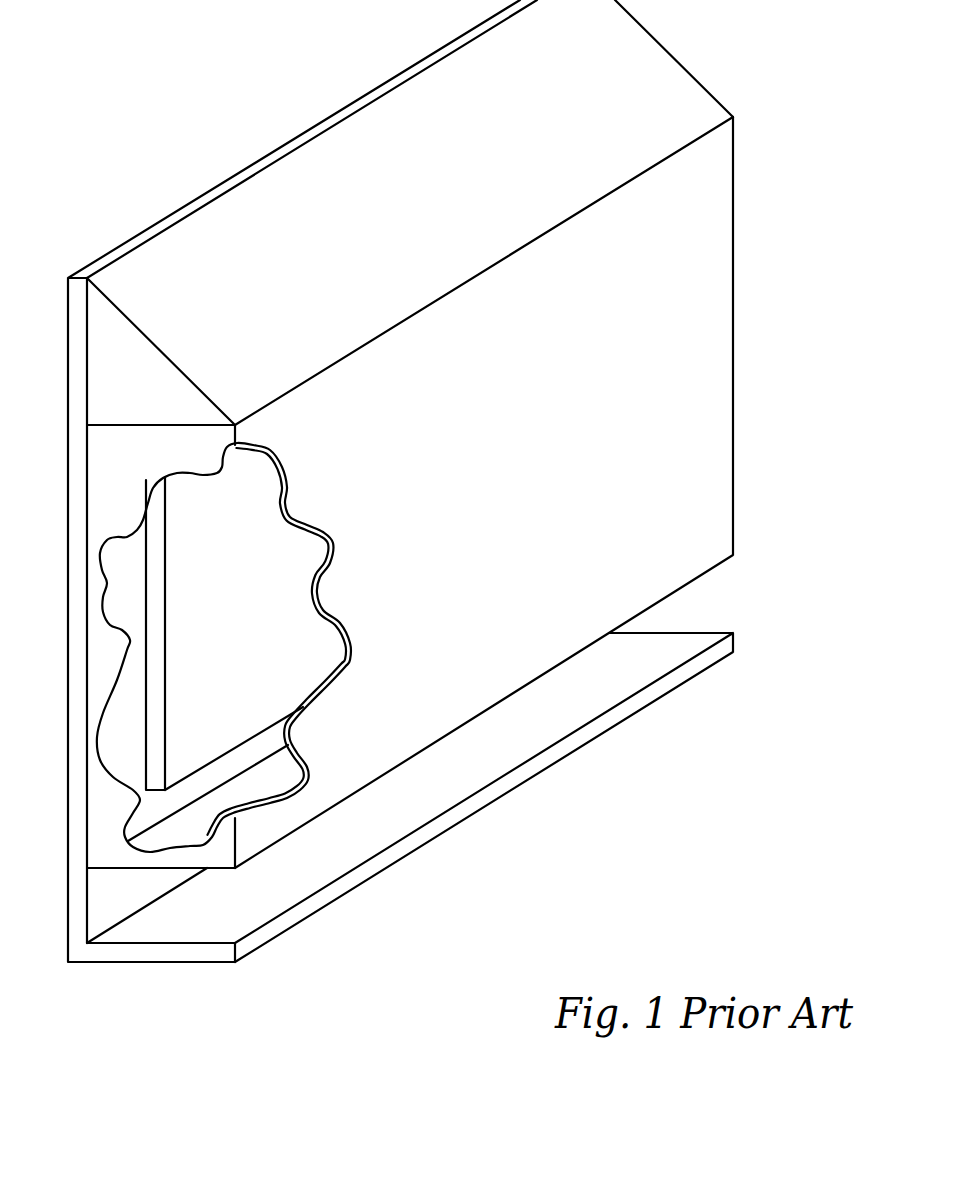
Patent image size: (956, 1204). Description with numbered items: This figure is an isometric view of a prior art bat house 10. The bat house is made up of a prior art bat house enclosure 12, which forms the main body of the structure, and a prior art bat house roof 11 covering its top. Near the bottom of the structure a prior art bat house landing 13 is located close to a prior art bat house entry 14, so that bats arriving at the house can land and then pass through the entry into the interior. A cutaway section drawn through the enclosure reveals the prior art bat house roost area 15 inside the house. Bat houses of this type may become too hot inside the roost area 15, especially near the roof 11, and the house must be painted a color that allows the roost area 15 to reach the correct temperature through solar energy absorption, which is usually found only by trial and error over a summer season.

The prior art bat house 10 is at (781, 703).
The prior art bat house roof 11 is at (257, 200).
The prior art bat house enclosure 12 is at (690, 393).
The prior art bat house landing 13 is at (545, 770).
The prior art bat house entry 14 is at (118, 898).
The prior art bat house roost area 15 is at (282, 682).